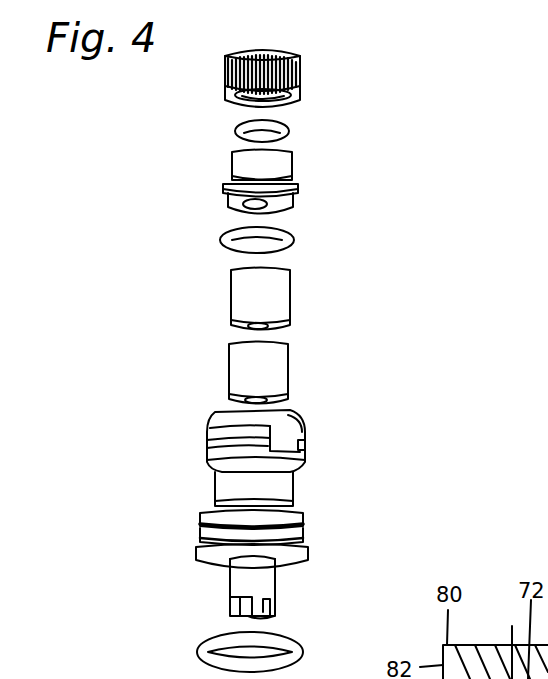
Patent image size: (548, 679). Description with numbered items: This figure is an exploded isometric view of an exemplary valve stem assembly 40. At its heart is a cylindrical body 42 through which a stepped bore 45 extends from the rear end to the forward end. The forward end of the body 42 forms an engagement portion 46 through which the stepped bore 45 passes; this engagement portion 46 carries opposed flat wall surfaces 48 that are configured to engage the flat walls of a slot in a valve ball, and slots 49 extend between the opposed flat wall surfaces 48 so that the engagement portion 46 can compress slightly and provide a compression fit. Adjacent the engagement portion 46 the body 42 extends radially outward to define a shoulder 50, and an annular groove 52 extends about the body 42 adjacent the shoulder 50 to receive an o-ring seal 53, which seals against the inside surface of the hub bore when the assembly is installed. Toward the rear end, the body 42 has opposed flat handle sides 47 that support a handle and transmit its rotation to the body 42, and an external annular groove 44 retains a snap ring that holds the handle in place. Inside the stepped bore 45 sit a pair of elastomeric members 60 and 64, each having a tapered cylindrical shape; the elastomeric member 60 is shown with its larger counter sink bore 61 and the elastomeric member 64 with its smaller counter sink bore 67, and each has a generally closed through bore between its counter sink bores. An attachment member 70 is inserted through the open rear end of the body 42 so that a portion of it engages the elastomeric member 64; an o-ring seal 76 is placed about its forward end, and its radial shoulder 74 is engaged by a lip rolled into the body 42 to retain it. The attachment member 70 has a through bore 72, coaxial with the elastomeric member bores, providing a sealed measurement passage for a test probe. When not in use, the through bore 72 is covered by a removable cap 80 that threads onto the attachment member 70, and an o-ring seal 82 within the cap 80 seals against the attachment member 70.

The valve stem assembly 40 is at (436, 189).
The removable cap 80 is at (310, 66).
The o-ring seal 82 is at (287, 125).
The attachment member 70 is at (303, 162).
The radial shoulder 74 is at (300, 192).
The through bore 72 is at (248, 212).
The o-ring seal 76 is at (294, 240).
The elastomeric member 64 is at (283, 296).
The smaller counter sink bore 67 is at (270, 329).
The elastomeric member 60 is at (283, 380).
The larger counter sink bore 61 is at (268, 404).
The external annular groove 44 is at (200, 452).
The flat handle sides 47 is at (300, 457).
The cylindrical body 42 is at (308, 506).
The annular groove 52 is at (315, 542).
The shoulder 50 is at (292, 563).
The engagement portion 46 is at (230, 583).
The opposed flat wall surfaces 48 is at (236, 602).
The slots 49 is at (277, 605).
The stepped bore 45 is at (266, 626).
The o-ring seal 53 is at (297, 647).